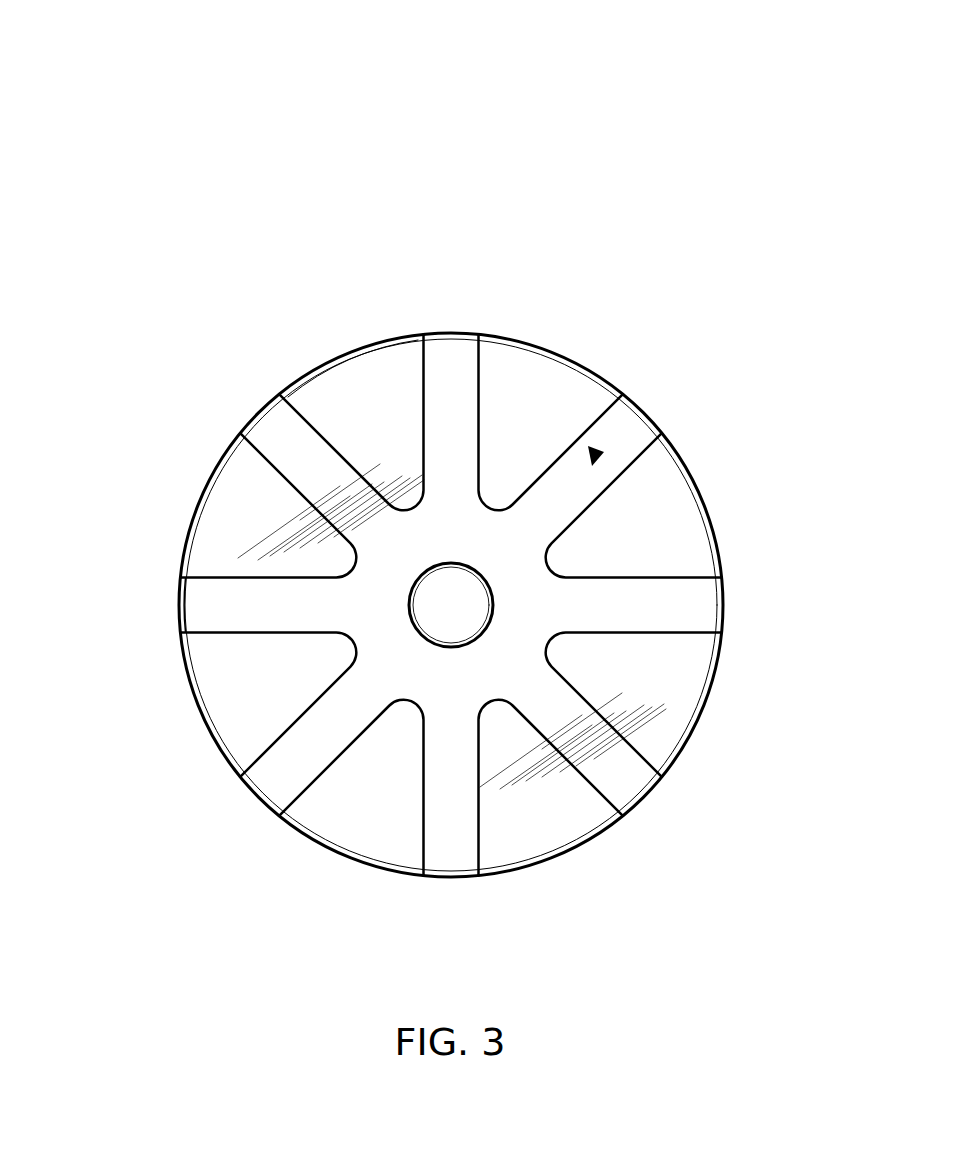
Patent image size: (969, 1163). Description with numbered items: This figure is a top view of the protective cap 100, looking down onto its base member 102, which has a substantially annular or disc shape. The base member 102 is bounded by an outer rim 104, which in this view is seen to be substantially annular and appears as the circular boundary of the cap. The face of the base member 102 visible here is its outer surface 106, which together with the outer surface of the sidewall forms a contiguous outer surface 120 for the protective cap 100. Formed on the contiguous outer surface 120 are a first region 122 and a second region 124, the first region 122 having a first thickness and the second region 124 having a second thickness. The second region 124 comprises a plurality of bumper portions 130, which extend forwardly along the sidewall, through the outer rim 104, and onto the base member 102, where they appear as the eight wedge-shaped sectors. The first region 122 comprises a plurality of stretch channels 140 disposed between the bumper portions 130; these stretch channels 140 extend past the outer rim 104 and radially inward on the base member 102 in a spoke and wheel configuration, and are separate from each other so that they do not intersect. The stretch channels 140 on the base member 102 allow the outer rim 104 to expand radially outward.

The protective cap 100 is at (170, 128).
The base member 102 is at (596, 455).
The outer rim 104 is at (725, 597).
The outer surface 106 is at (447, 383).
The contiguous outer surface 120 is at (650, 530).
The first region 122 is at (222, 603).
The second region 124 is at (370, 400).
The bumper portions 130 is at (330, 393).
The stretch channels 140 is at (467, 432).